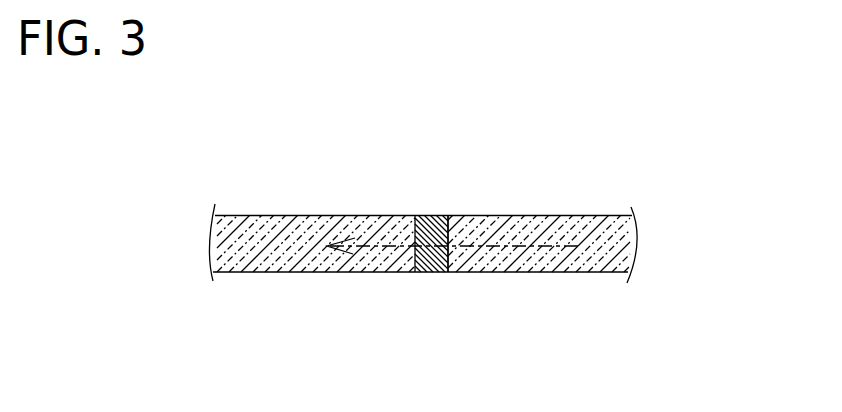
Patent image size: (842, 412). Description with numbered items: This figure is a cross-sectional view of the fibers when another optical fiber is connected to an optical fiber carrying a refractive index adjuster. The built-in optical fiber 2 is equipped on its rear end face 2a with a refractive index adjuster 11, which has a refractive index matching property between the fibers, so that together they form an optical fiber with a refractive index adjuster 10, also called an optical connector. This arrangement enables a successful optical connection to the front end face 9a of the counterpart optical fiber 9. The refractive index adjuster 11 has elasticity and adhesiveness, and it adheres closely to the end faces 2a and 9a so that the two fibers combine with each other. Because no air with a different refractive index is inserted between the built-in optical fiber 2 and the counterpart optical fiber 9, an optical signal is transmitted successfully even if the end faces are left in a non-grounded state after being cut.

The optical fiber with a refractive index adjuster 10 is at (278, 214).
The built-in optical fiber 2 is at (315, 215).
The rear end face 2a is at (428, 215).
The refractive index adjuster 11 is at (441, 215).
The counterpart optical fiber 9 is at (546, 264).
The front end face 9a is at (432, 273).